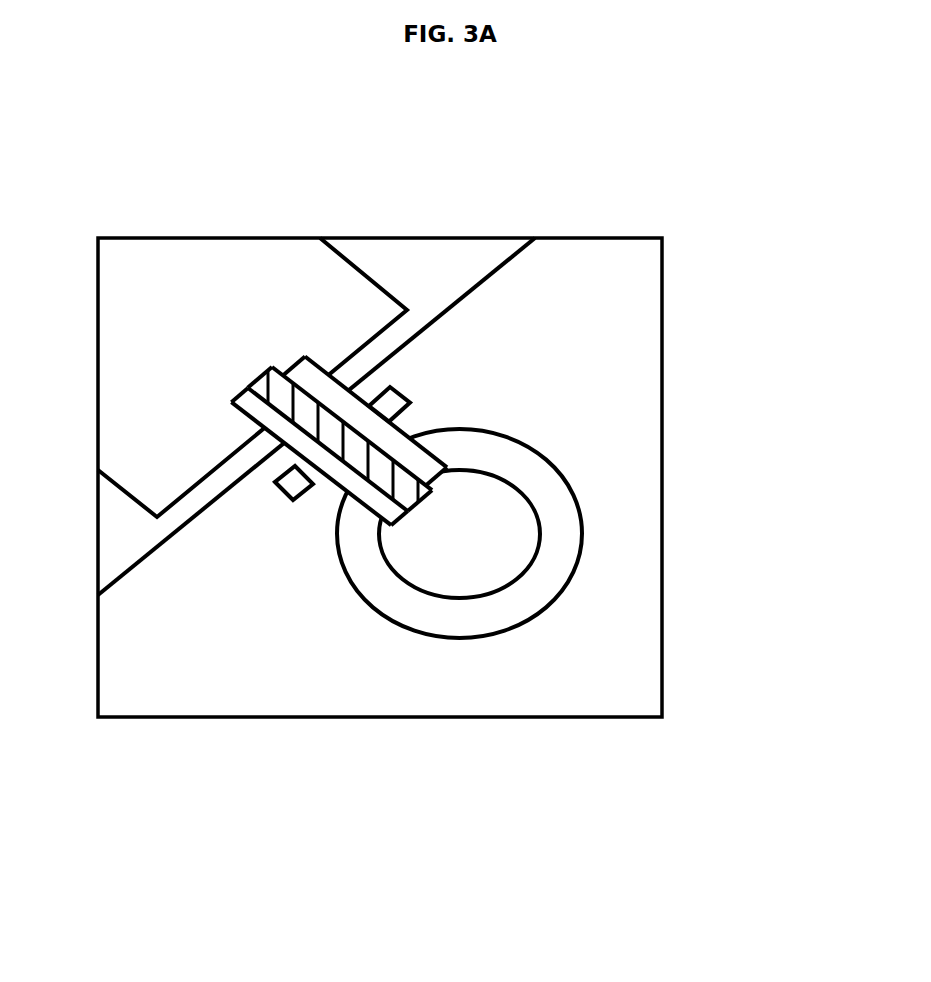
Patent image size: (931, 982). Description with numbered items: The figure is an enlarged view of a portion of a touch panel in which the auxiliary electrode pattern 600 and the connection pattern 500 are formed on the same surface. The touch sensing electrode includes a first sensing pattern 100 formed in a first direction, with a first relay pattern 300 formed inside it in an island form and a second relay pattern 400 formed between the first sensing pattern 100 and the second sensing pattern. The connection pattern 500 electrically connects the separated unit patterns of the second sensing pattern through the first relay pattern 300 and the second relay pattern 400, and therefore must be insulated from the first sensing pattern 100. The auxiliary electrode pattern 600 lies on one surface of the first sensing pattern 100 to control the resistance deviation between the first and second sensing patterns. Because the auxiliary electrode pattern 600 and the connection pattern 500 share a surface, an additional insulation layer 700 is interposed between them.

The first sensing pattern 100 is at (585, 305).
The first relay pattern 300 is at (498, 537).
The second relay pattern 400 is at (172, 305).
The connection pattern 500 is at (297, 362).
The auxiliary electrode pattern 600 is at (313, 487).
The insulation layer 700 is at (373, 507).